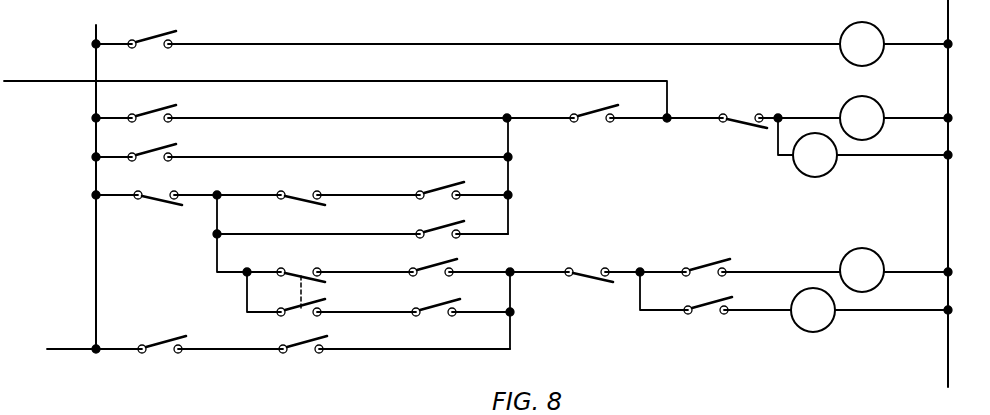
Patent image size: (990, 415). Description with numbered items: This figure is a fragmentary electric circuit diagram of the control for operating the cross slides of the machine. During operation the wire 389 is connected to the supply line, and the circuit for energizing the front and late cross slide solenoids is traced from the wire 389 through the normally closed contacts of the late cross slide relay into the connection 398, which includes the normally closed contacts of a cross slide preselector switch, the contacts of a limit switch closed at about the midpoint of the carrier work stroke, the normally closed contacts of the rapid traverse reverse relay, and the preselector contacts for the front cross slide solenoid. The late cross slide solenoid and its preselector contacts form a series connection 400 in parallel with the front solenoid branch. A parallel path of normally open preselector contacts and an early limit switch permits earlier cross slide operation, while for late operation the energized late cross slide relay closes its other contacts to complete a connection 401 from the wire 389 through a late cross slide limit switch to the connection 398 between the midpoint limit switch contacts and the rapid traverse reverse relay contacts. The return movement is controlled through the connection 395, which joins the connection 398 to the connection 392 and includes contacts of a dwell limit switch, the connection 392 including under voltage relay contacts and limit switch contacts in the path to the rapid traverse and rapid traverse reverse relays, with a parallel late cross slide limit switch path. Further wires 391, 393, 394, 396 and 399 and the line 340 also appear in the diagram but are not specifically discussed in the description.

The right bus conductor 340 is at (960, 72).
The wire 389 is at (96, 106).
The LCS conductor 391 is at (388, 43).
The connection 392 is at (445, 116).
The RTRR conductor 393 is at (925, 154).
The conductor 394 is at (64, 80).
The connection 395 is at (509, 190).
The conductor 396 is at (415, 156).
The connection 398 is at (223, 210).
The conductor 399 is at (310, 233).
The series connection 400 is at (666, 314).
The connection 401 is at (233, 348).